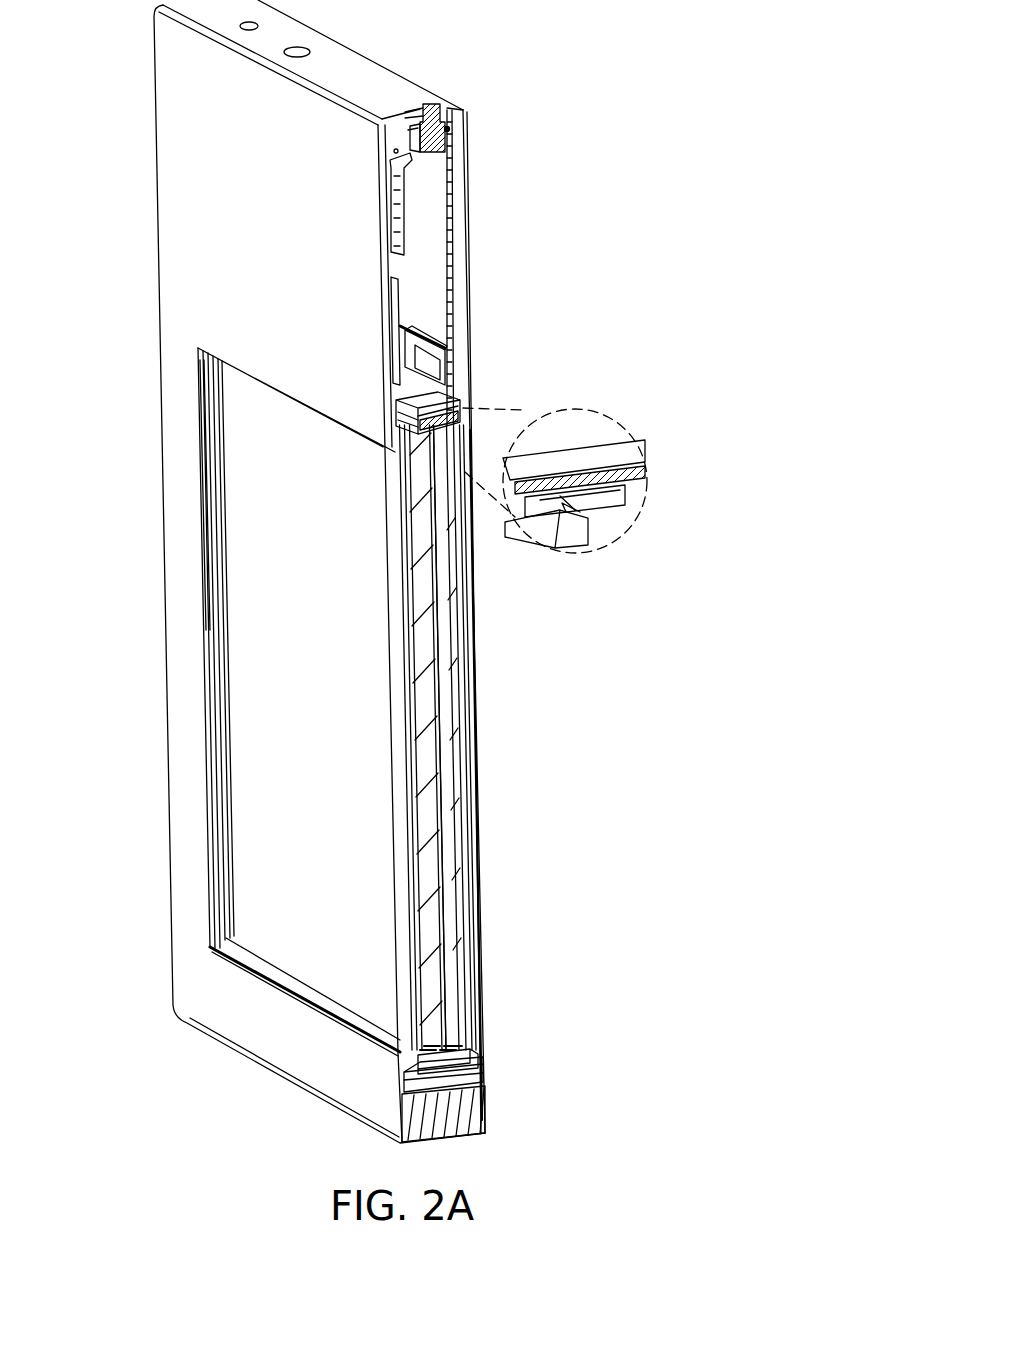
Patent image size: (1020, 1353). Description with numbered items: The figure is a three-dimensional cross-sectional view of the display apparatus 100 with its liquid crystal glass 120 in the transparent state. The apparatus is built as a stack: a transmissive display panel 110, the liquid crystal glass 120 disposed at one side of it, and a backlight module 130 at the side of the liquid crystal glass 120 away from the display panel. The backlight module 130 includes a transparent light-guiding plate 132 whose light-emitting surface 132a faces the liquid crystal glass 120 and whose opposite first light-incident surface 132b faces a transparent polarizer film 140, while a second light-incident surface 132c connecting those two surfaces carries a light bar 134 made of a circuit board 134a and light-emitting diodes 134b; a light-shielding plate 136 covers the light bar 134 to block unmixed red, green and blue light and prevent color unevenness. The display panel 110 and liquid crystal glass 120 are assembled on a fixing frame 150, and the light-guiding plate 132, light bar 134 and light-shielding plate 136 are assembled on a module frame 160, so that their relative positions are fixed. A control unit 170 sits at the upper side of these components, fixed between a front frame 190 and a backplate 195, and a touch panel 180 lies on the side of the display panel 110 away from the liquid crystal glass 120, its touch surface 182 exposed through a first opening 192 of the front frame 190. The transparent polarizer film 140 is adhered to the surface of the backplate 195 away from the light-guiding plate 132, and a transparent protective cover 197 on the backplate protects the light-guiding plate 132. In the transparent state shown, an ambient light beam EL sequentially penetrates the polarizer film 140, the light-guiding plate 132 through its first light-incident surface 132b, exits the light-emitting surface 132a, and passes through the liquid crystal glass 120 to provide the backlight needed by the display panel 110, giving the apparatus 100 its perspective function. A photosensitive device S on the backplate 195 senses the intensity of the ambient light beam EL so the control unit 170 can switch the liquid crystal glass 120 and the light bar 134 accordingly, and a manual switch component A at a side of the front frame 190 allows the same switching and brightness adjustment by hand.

The display apparatus 100 is at (532, 1172).
The transmissive display panel 110 is at (436, 790).
The liquid crystal glass 120 is at (425, 830).
The backlight module 130 is at (627, 985).
The transparent light-guiding plate 132 is at (458, 988).
The light-emitting surface 132a is at (447, 608).
The first light-incident surface 132b is at (458, 609).
The second light-incident surface 132c is at (582, 512).
The light bar 134 is at (448, 1040).
The circuit board 134a is at (622, 470).
The light-emitting diodes 134b is at (605, 497).
The light-shielding plate 136 is at (458, 1073).
The transparent polarizer film 140 is at (478, 878).
The fixing frame 150 is at (440, 372).
The module frame 160 is at (412, 412).
The control unit 170 is at (455, 232).
The touch panel 180 is at (413, 759).
The touch surface 182 is at (262, 730).
The front frame 190 is at (333, 137).
The first opening 192 is at (212, 627).
The backplate 195 is at (455, 338).
The protective cover 197 is at (475, 943).
The manual switch component A is at (449, 129).
The photosensitive device S is at (423, 362).
The ambient light beam EL is at (318, 697).